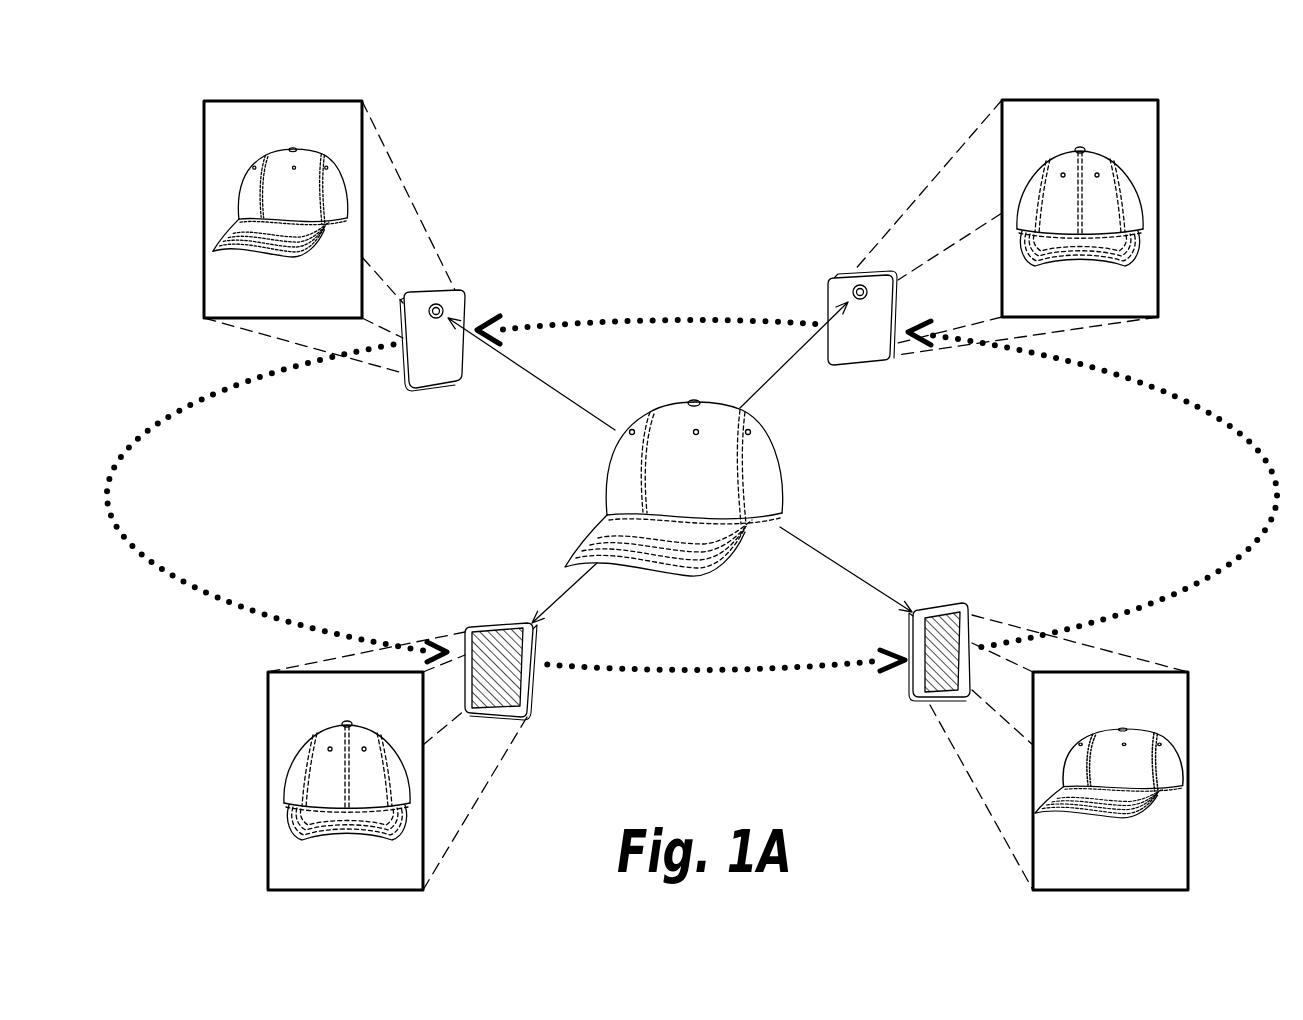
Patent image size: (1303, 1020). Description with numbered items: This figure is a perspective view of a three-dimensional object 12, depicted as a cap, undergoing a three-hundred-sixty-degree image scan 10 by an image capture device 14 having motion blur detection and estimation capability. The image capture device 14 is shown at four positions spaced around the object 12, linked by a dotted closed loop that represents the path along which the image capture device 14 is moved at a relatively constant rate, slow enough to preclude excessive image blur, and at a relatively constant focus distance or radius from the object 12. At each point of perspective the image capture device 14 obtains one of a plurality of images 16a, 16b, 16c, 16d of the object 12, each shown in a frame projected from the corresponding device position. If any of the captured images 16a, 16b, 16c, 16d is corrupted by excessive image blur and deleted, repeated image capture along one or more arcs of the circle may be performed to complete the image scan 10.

The 360° image scan 10 is at (675, 100).
The three-dimensional object 12 is at (760, 452).
The image capture device 14 is at (445, 358).
The captured image 16a is at (278, 723).
The captured image 16b is at (1173, 703).
The captured image 16c is at (1060, 112).
The captured image 16d is at (273, 110).